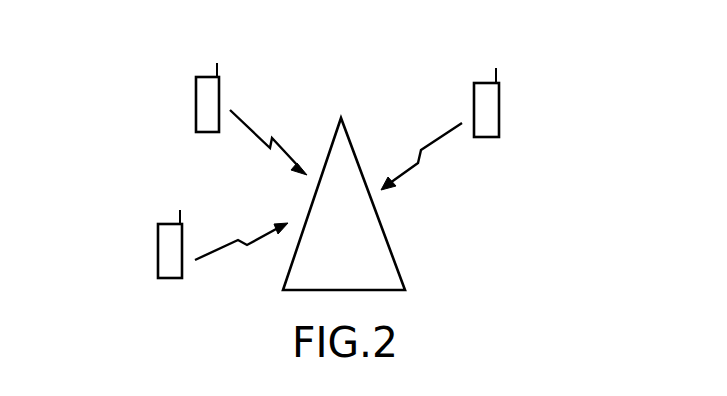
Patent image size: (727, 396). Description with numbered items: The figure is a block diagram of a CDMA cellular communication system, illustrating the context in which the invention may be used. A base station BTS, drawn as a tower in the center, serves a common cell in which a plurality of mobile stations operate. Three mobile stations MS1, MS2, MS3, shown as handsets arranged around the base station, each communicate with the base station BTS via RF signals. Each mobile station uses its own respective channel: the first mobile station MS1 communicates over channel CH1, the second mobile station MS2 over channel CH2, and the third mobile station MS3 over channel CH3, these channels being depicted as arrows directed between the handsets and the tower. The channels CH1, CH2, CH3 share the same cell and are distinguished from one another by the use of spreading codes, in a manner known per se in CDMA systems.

The base station BTS is at (403, 284).
The mobile station MS1 is at (497, 102).
The mobile station MS2 is at (160, 253).
The mobile station MS3 is at (219, 88).
The channel CH1 is at (429, 159).
The channel CH2 is at (241, 252).
The channel CH3 is at (266, 143).